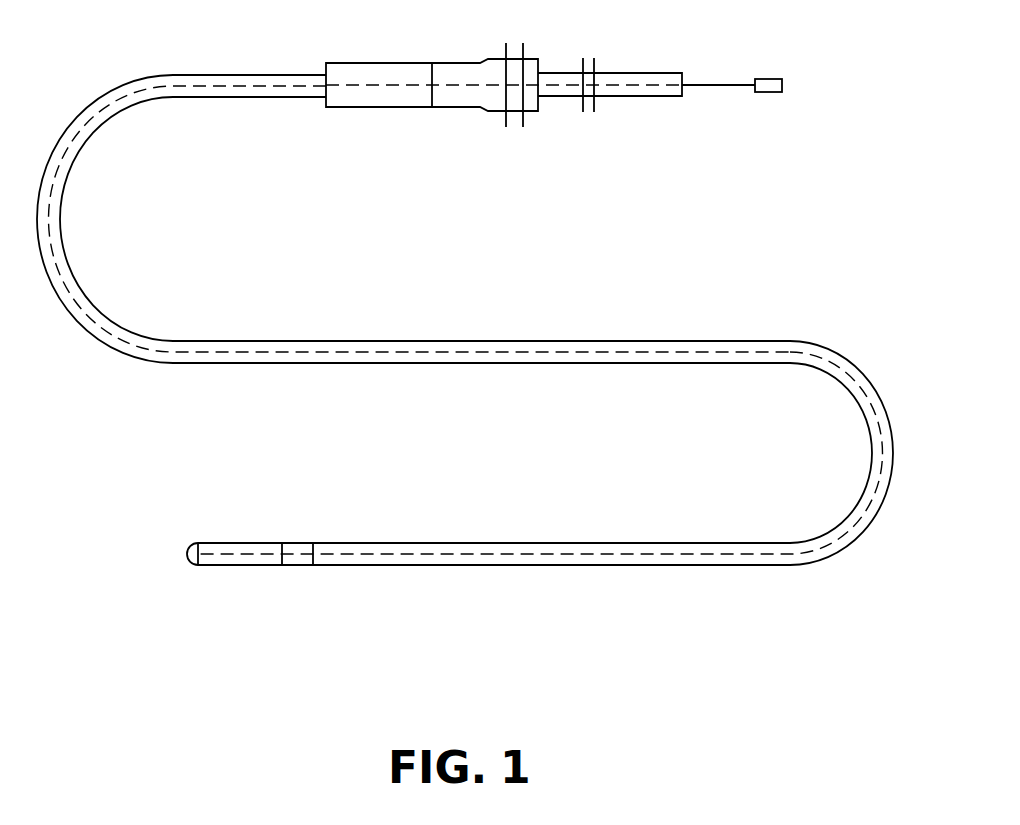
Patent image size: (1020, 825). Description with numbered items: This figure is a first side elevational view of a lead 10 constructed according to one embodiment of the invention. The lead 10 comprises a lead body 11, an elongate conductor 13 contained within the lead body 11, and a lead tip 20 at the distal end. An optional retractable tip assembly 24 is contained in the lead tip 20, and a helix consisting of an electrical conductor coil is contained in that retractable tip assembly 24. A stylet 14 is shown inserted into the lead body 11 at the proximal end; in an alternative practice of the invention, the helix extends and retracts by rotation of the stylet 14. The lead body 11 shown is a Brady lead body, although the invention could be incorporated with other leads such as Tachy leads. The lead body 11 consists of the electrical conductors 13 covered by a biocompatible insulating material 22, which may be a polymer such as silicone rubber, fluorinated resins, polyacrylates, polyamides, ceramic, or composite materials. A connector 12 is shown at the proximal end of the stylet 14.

The lead 10 is at (465, 369).
The lead body 11 is at (575, 565).
The connector cap 12 is at (768, 92).
The elongate conductor 13 is at (650, 352).
The stylet 14 is at (718, 84).
The lead tip 20 is at (206, 603).
The biocompatible insulating material 22 is at (488, 365).
The retractable tip assembly 24 is at (187, 552).